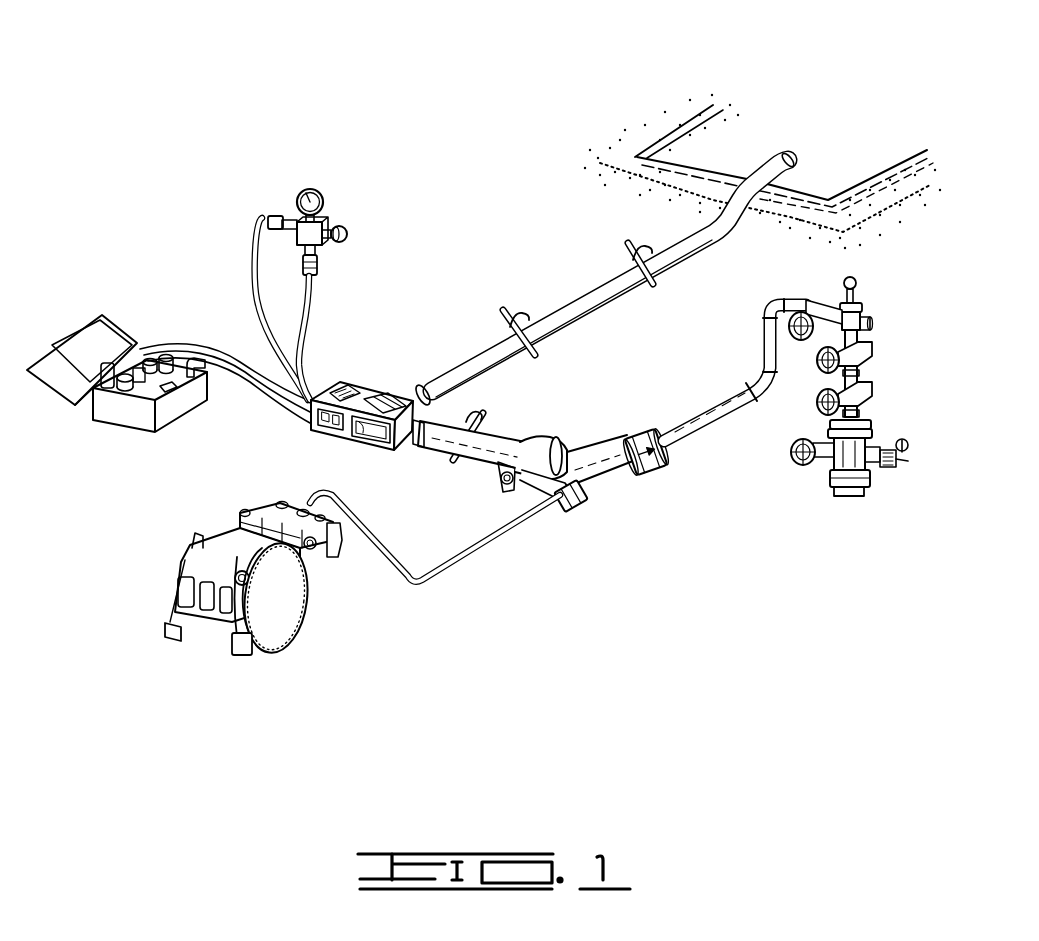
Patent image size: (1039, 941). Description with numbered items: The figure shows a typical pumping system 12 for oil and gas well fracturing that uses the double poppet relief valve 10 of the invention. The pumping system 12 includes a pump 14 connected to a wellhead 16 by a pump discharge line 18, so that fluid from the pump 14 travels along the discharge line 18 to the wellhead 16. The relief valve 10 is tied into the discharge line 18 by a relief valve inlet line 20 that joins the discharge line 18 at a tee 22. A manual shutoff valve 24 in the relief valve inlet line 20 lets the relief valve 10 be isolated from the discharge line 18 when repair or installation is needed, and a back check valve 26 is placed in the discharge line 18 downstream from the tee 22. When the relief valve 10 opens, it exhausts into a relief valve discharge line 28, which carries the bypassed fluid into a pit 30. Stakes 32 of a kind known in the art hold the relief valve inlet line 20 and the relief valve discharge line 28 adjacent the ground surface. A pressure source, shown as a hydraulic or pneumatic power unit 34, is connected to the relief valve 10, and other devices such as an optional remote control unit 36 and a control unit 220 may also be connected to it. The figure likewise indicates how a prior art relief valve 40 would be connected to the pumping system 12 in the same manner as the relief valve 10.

The double poppet relief valve 10 is at (372, 385).
The pumping system 12 is at (432, 66).
The pump 14 is at (279, 627).
The wellhead 16 is at (845, 450).
The pump discharge line 18 is at (723, 405).
The relief valve inlet line 20 is at (495, 442).
The tee 22 is at (578, 506).
The manual shutoff valve 24 is at (550, 437).
The back check valve 26 is at (646, 468).
The relief valve discharge line 28 is at (463, 372).
The pit 30 is at (725, 147).
The stakes 32 is at (510, 327).
The hydraulic or pneumatic power unit 34 is at (163, 357).
The remote control unit 36 is at (303, 232).
The prior art relief valve 40 is at (372, 385).
The control unit 220 is at (386, 368).